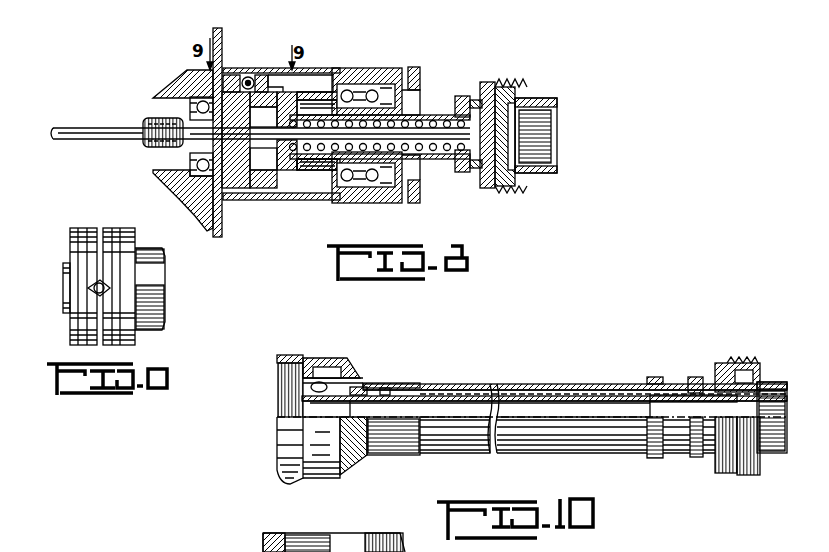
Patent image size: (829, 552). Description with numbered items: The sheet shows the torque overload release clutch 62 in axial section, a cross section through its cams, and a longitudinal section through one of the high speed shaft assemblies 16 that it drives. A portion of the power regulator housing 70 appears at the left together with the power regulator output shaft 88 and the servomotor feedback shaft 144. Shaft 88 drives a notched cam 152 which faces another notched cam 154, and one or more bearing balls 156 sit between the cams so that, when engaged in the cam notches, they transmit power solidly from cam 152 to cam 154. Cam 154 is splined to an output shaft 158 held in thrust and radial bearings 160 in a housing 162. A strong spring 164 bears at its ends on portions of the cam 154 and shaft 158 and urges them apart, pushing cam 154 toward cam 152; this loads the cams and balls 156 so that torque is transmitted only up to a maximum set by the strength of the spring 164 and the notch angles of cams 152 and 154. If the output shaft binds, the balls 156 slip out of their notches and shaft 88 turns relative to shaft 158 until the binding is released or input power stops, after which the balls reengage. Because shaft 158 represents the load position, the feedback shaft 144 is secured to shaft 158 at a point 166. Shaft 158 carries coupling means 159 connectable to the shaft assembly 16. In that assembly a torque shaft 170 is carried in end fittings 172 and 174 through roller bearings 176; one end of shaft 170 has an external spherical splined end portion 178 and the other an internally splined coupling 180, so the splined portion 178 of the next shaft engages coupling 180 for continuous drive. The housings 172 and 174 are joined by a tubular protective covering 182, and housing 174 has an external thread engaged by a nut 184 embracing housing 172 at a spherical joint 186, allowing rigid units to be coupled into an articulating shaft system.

In FIG. 8, the servomotor feedback shaft 144 is at (54, 141).
In FIG. 8, the power regulator output shaft 88 is at (147, 150).
In FIG. 8, the power regulator housing 70 is at (167, 178).
In FIG. 8, the torque overload release clutch 62 is at (260, 206).
In FIG. 8, the notched cam 152 is at (233, 78).
In FIG. 9, the notched cam 152 is at (84, 322).
In FIG. 8, the notched cam 154 is at (303, 86).
In FIG. 9, the notched cam 154 is at (112, 323).
In FIG. 8, the bearing balls 156 is at (255, 80).
In FIG. 9, the bearing balls 156 is at (105, 285).
In FIG. 8, the output shaft 158 is at (340, 85).
In FIG. 8, the thrust and radial bearings 160 is at (420, 72).
In FIG. 8, the housing 162 is at (323, 201).
In FIG. 8, the spring 164 is at (447, 155).
In FIG. 8, the point 166 is at (453, 114).
In FIG. 8, the coupling means 159 is at (531, 75).
In FIG. 10, the nut 184 is at (302, 358).
In FIG. 10, the spherical joint 186 is at (318, 362).
In FIG. 10, the roller bearings 176 is at (360, 388).
In FIG. 10, the end fitting 172 is at (381, 385).
In FIG. 10, the shaft assembly 16 is at (447, 380).
In FIG. 10, the external spherical splined end portion 178 is at (303, 392).
In FIG. 10, the torque shaft 170 is at (500, 386).
In FIG. 10, the tubular protective covering 182 is at (572, 386).
In FIG. 10, the end fitting 174 is at (700, 385).
In FIG. 10, the internally splined coupling 180 is at (770, 455).